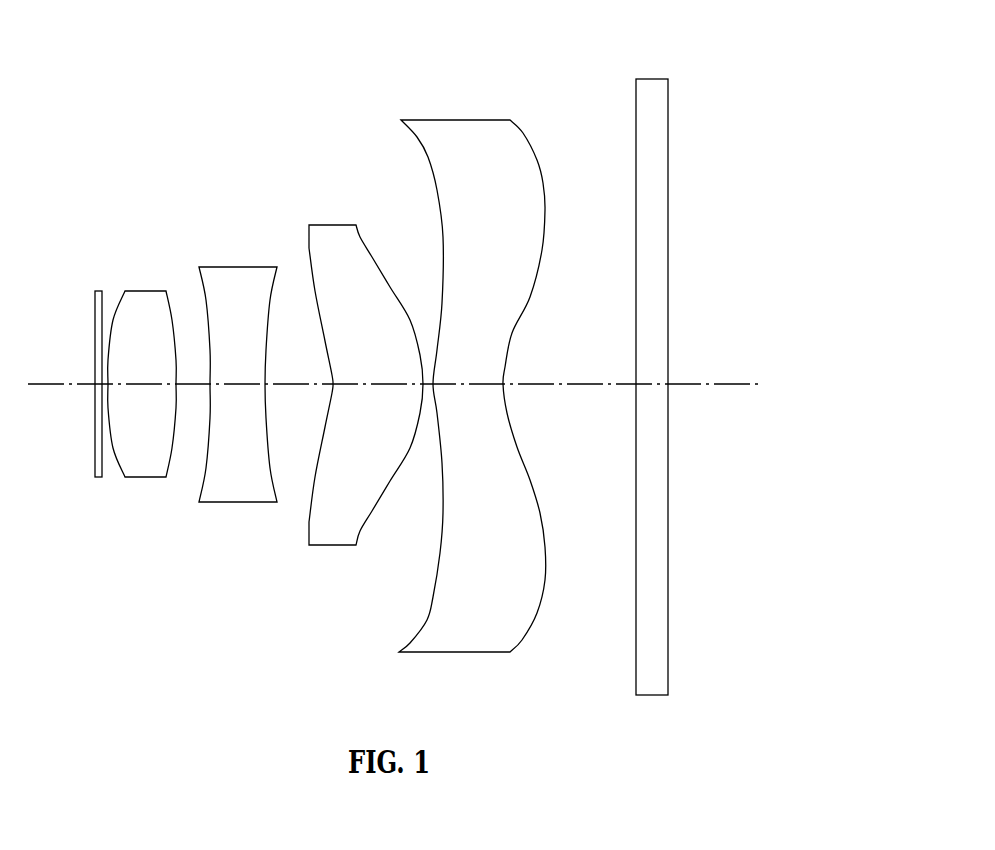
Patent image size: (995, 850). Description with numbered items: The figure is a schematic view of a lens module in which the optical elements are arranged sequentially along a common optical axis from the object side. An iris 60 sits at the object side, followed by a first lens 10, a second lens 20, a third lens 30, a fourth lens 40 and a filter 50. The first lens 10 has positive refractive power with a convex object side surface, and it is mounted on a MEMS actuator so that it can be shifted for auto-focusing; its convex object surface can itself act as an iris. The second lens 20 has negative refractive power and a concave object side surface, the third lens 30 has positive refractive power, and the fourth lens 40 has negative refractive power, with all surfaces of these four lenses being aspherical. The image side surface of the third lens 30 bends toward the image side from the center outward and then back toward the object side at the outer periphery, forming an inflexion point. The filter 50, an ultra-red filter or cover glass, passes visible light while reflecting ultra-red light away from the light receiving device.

The first lens 10 is at (138, 291).
The second lens 20 is at (230, 267).
The third lens 30 is at (325, 225).
The fourth lens 40 is at (447, 120).
The filter 50 is at (645, 79).
The iris 60 is at (95, 303).